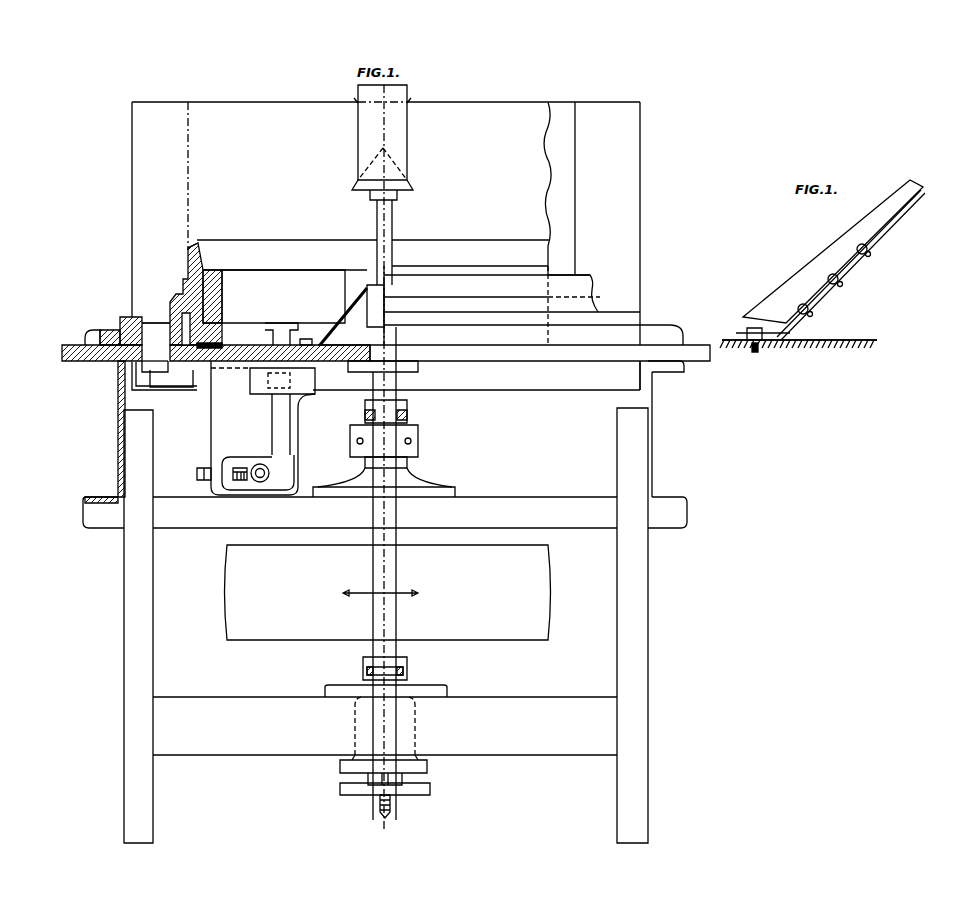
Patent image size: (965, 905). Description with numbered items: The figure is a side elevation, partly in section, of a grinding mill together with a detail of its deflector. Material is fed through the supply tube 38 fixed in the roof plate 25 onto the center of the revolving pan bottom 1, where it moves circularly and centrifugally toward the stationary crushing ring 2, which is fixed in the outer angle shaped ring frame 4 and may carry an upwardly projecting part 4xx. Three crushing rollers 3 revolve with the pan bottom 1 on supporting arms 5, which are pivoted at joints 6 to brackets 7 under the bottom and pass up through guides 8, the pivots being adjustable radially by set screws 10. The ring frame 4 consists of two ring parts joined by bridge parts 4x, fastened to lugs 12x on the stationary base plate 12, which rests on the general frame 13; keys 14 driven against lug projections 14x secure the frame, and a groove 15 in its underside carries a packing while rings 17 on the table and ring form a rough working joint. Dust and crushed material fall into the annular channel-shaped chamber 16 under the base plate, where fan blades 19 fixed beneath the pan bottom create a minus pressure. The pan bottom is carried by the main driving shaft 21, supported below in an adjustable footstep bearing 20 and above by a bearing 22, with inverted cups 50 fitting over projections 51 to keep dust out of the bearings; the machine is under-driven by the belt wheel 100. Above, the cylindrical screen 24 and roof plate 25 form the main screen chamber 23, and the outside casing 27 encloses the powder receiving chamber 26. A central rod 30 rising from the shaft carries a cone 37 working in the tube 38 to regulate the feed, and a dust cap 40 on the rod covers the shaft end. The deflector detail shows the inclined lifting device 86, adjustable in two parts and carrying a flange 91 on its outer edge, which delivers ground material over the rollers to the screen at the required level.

In FIG. 1, the revolving receiving table or pan bottom 1 is at (334, 342).
In FIG. 1a, the revolving receiving table or pan bottom 1 is at (829, 340).
In FIG. 1, the stationary crushing or grinding ring 2 is at (210, 275).
In FIG. 1, the crushing rollers 3 is at (283, 296).
In FIG. 1, the outer angle shaped ring frame 4 is at (182, 291).
In FIG. 1, the bridge parts 4x is at (154, 323).
In FIG. 1, the upwardly projecting part 4xx is at (195, 252).
In FIG. 1, the supporting arms or carriers 5 is at (273, 337).
In FIG. 1, the pivots or joints 6 is at (258, 465).
In FIG. 1, the brackets 7 is at (263, 428).
In FIG. 1, the guides 8 is at (313, 378).
In FIG. 1, the set screws 10 is at (240, 468).
In FIG. 1, the stationary base or bed plate 12 is at (79, 348).
In FIG. 1, the lugs 12x is at (152, 358).
In FIG. 1, the general frame 13 is at (118, 428).
In FIG. 1, the keys 14 is at (108, 331).
In FIG. 1, the lug projections 14x is at (92, 333).
In FIG. 1, the annular groove 15 is at (205, 318).
In FIG. 1, the annular channel-shaped chamber 16 is at (150, 390).
In FIG. 1, the ring 17 is at (220, 345).
In FIG. 1, the fan blades 19 is at (165, 386).
In FIG. 1, the adjustable footstep bearing 20 is at (427, 766).
In FIG. 1, the main carrying and driving shaft 21 is at (373, 397).
In FIG. 1, the bearing 22 is at (418, 432).
In FIG. 1, the main screen chamber 23 is at (410, 188).
In FIG. 1, the cylindrical screen 24 is at (188, 180).
In FIG. 1, the roof plate 25 is at (252, 102).
In FIG. 1, the powder receiving chamber 26 is at (387, 202).
In FIG. 1, the outside casing or cylinder 27 is at (132, 209).
In FIG. 1, the central rod 30 is at (377, 234).
In FIG. 1, the cone 37 is at (357, 186).
In FIG. 1, the material supply tube 38 is at (358, 130).
In FIG. 1, the dust cap 40 is at (367, 290).
In FIG. 1, the inverted cups 50 is at (407, 404).
In FIG. 1, the projections 51 is at (407, 415).
In FIG. 1, the inclined lifting device 86 is at (348, 328).
In FIG. 1a, the inclined lifting device 86 is at (888, 226).
In FIG. 1a, the flange 91 is at (813, 270).
In FIG. 1, the driving belt wheel 100 is at (388, 592).